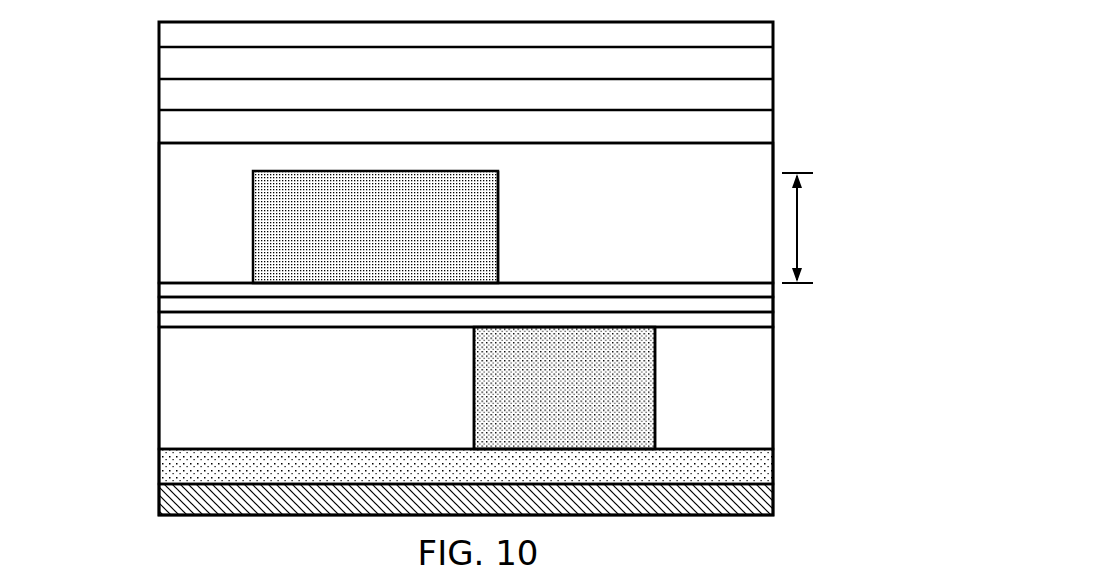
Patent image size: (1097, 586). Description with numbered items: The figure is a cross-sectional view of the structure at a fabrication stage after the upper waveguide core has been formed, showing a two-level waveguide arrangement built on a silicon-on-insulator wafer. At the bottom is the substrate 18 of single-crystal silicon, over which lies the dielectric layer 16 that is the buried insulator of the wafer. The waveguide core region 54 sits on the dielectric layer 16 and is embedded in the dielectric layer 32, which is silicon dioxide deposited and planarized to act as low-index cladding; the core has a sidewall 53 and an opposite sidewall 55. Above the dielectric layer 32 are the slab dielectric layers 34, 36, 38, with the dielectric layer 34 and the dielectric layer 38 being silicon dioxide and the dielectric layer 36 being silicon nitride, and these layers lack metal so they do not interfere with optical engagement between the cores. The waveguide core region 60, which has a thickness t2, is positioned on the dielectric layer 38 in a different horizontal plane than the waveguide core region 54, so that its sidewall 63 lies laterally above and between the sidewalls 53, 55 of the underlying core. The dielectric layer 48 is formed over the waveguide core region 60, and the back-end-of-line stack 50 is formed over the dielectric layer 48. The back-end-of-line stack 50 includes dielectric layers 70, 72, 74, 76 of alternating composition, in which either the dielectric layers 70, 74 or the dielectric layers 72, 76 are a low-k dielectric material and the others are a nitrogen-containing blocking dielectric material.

The back-end-of-line stack 50 is at (140, 102).
The dielectric layer 76 is at (740, 43).
The dielectric layer 74 is at (748, 69).
The dielectric layer 72 is at (748, 100).
The dielectric layer 70 is at (755, 127).
The dielectric layer 48 is at (180, 253).
The waveguide core region 60 is at (277, 228).
The sidewall 63 is at (499, 220).
The thickness t2 is at (806, 228).
The dielectric layer 38 is at (188, 292).
The dielectric layer 36 is at (742, 308).
The dielectric layer 34 is at (188, 322).
The dielectric layer 32 is at (192, 394).
The waveguide core region 54 is at (617, 390).
The sidewall 53 is at (474, 380).
The sidewall 55 is at (657, 431).
The dielectric layer 16 is at (192, 472).
The substrate 18 is at (745, 503).